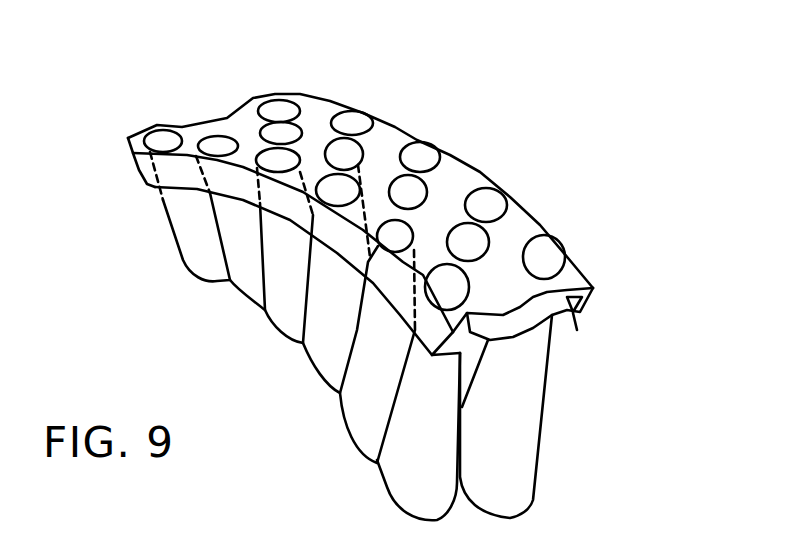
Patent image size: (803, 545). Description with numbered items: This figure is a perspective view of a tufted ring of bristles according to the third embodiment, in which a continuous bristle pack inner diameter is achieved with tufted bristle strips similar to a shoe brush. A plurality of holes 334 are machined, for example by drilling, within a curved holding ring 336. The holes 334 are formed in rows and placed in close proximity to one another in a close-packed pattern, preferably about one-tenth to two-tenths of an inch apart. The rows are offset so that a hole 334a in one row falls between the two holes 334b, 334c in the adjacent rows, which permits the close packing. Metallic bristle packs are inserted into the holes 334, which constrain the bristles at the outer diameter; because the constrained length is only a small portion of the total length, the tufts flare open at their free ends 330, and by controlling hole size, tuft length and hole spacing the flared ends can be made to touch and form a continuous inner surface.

The free ends 330 is at (414, 289).
The holding ring 336 is at (240, 123).
The holes 334 is at (347, 123).
The hole 334a is at (458, 242).
The hole 334b is at (483, 200).
The hole 334c is at (553, 262).